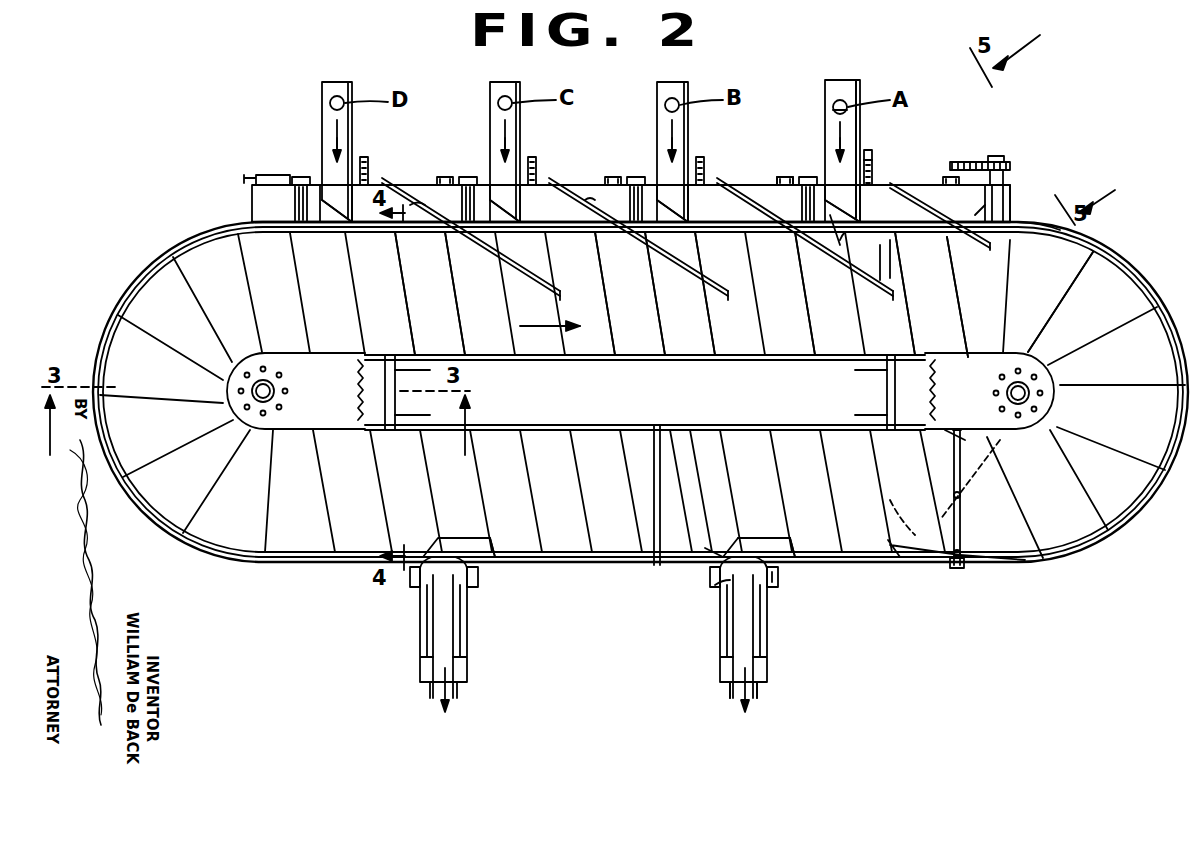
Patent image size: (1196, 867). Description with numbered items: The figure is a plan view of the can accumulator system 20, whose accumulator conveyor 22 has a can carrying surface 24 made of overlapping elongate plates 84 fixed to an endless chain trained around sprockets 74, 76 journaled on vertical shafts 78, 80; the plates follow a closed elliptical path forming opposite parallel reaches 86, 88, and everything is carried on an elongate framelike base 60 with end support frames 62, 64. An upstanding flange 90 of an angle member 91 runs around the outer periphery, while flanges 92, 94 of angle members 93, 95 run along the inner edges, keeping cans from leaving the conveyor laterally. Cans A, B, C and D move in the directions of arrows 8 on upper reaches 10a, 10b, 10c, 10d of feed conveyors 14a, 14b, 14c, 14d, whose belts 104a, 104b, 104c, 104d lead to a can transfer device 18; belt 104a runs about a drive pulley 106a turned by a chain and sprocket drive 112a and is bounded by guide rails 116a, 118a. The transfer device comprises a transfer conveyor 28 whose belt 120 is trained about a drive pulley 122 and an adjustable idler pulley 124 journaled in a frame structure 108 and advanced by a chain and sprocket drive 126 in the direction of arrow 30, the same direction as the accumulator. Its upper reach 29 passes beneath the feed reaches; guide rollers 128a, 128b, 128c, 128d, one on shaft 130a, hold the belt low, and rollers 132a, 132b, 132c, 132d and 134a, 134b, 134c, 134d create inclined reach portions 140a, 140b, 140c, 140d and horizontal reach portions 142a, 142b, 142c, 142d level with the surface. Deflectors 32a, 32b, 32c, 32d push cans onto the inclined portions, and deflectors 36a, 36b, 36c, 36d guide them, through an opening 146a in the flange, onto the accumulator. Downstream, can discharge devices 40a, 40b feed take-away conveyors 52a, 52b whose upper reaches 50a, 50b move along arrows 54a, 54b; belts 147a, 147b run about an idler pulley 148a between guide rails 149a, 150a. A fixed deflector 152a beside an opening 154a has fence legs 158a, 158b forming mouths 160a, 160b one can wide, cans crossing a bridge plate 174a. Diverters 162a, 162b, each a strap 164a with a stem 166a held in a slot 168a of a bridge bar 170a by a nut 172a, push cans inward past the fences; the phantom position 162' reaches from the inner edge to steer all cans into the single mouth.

The arrows 8 is at (347, 146).
The upper reach 10a is at (840, 90).
The upper reach 10b is at (665, 90).
The upper reach 10c is at (497, 82).
The upper reach 10d is at (330, 88).
The feed conveyor 14a is at (846, 78).
The feed conveyor 14b is at (678, 82).
The feed conveyor 14c is at (510, 82).
The feed conveyor 14d is at (339, 82).
The can transfer device 18 is at (1022, 210).
The can accumulator system 20 is at (192, 216).
The accumulator conveyor 22 is at (1110, 300).
The can carrying surface 24 is at (229, 287).
The transfer conveyor 28 is at (250, 201).
The upper reach 29 is at (588, 195).
The arrow 30 is at (520, 326).
The deflector 32a is at (842, 212).
The deflector 32b is at (672, 212).
The deflector 32c is at (505, 212).
The deflector 32d is at (340, 222).
The deflector 36a is at (975, 243).
The deflector 36b is at (815, 222).
The deflector 36c is at (665, 250).
The deflector 36d is at (500, 240).
The can discharge device 40a is at (708, 612).
The can discharge device 40b is at (410, 628).
The upper reach 50a is at (745, 621).
The upper reach 50b is at (445, 624).
The take-away conveyor 52a is at (772, 638).
The take-away conveyor 52b is at (472, 640).
The arrow 54a is at (742, 693).
The arrow 54b is at (450, 692).
The base 60 is at (430, 348).
The end support frame 62 is at (420, 430).
The end support frame 64 is at (884, 380).
The sprocket 74 is at (327, 390).
The sprocket 76 is at (969, 383).
The vertical shaft 78 is at (275, 393).
The vertical shaft 80 is at (1008, 394).
The elongate plates 84 is at (360, 330).
The reach 86 is at (620, 360).
The reach 88 is at (700, 440).
The upstanding flange 90 is at (138, 282).
The angle member 91 is at (120, 318).
The flange 92 is at (518, 360).
The angle member 93 is at (560, 360).
The flange 94 is at (782, 426).
The angle member 95 is at (835, 426).
The belt 104a is at (833, 128).
The belt 104b is at (665, 108).
The belt 104c is at (498, 108).
The belt 104d is at (330, 122).
The drive pulley 106a is at (835, 250).
The transfer device frame structure 108 is at (1008, 192).
The chain and sprocket drive 112a is at (870, 152).
The guide rail 116a is at (832, 108).
The guide rail 118a is at (860, 86).
The belt 120 is at (420, 200).
The drive pulley 122 is at (986, 200).
The adjustable idler pulley 124 is at (260, 175).
The chain and sprocket drive 126 is at (958, 162).
The guide roller 128a is at (810, 225).
The guide roller 128b is at (640, 215).
The guide roller 128c is at (445, 238).
The guide roller 128d is at (296, 178).
The shaft 130a is at (800, 158).
The guide roller 132a is at (876, 182).
The guide roller 132b is at (706, 176).
The guide roller 132c is at (540, 176).
The guide roller 132d is at (372, 176).
The guide roller 134a is at (944, 182).
The guide roller 134b is at (778, 182).
The guide roller 134c is at (612, 177).
The guide roller 134d is at (445, 177).
The inclined reach portion 140a is at (890, 235).
The inclined reach portion 140b is at (722, 215).
The inclined reach portion 140c is at (515, 215).
The inclined reach portion 140d is at (372, 210).
The horizontal reach portion 142a is at (932, 232).
The horizontal reach portion 142b is at (758, 238).
The horizontal reach portion 142c is at (575, 222).
The horizontal reach portion 142d is at (398, 240).
The opening 146a is at (905, 262).
The belt 147a is at (750, 603).
The belt 147b is at (450, 604).
The idler pulley 148a is at (782, 575).
The guide rail 149a is at (728, 683).
The guide rail 150a is at (762, 684).
The fixed deflector 152a is at (725, 550).
The opening 154a is at (712, 576).
The leg 158a is at (760, 538).
The leg 158b is at (460, 545).
The mouth 160a is at (795, 555).
The mouth 160b is at (487, 548).
The diverter 162a is at (908, 560).
The diverter 162b is at (655, 550).
The diverter alternative position 162' is at (909, 507).
The strap 164a is at (995, 557).
The stem 166a is at (962, 565).
The slot 168a is at (965, 528).
The bridge bar 170a is at (955, 440).
The nut 172a is at (958, 570).
The bridge plate 174a is at (715, 585).